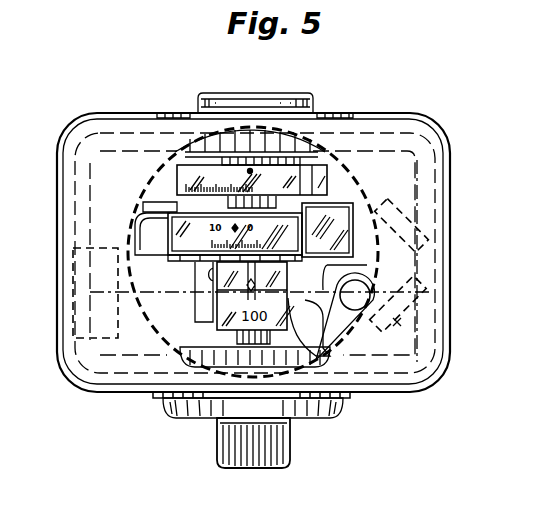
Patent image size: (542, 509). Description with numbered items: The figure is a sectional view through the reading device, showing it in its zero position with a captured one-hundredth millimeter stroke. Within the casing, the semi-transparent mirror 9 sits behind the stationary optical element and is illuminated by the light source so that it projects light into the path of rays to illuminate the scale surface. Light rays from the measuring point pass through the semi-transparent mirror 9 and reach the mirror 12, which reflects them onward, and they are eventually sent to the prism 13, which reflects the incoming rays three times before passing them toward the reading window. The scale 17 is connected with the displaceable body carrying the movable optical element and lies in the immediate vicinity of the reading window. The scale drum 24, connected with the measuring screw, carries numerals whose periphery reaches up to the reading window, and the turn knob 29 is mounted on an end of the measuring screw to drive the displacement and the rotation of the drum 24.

The semi-transparent mirror 9 is at (333, 214).
The mirror 12 is at (422, 236).
The prism 13 is at (100, 312).
The scale 17 is at (335, 267).
The scale drum 24 is at (290, 168).
The turn knob 29 is at (232, 448).